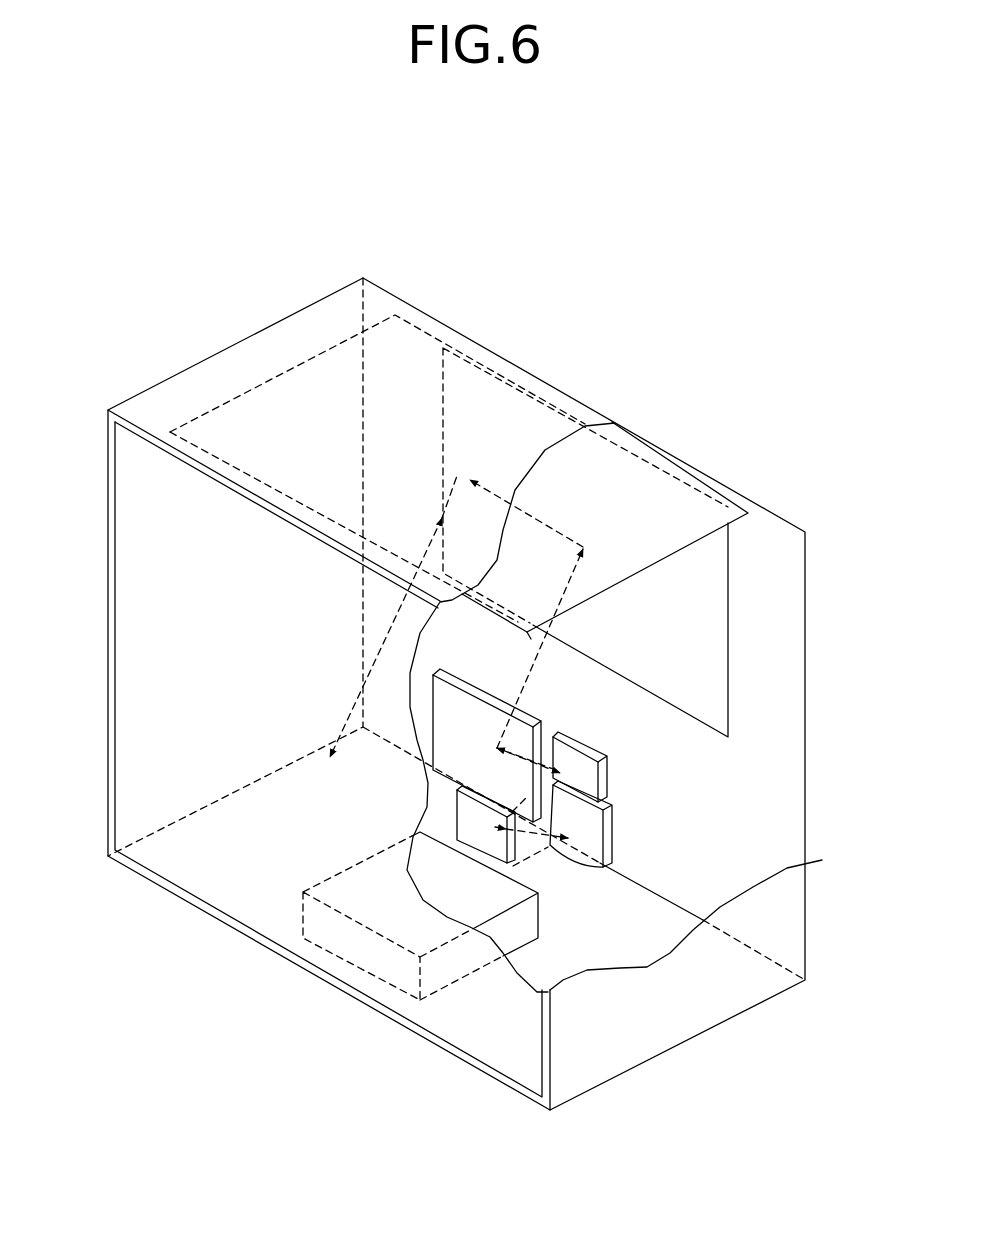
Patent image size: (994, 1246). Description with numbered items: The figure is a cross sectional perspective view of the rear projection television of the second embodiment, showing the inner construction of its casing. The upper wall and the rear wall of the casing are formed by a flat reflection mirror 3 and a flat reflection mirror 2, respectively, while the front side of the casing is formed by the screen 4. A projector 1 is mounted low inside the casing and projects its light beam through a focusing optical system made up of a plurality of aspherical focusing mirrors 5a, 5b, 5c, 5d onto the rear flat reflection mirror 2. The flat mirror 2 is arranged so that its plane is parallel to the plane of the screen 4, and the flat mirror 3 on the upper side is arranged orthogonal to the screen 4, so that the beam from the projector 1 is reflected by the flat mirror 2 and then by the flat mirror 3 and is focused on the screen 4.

The projector 1 is at (483, 907).
The flat reflection mirror 2 is at (713, 602).
The flat reflection mirror 3 is at (670, 523).
The screen 4 is at (130, 520).
The aspherical focusing mirror 5a is at (455, 750).
The aspherical focusing mirror 5b is at (592, 780).
The aspherical focusing mirror 5c is at (470, 828).
The aspherical focusing mirror 5d is at (602, 833).